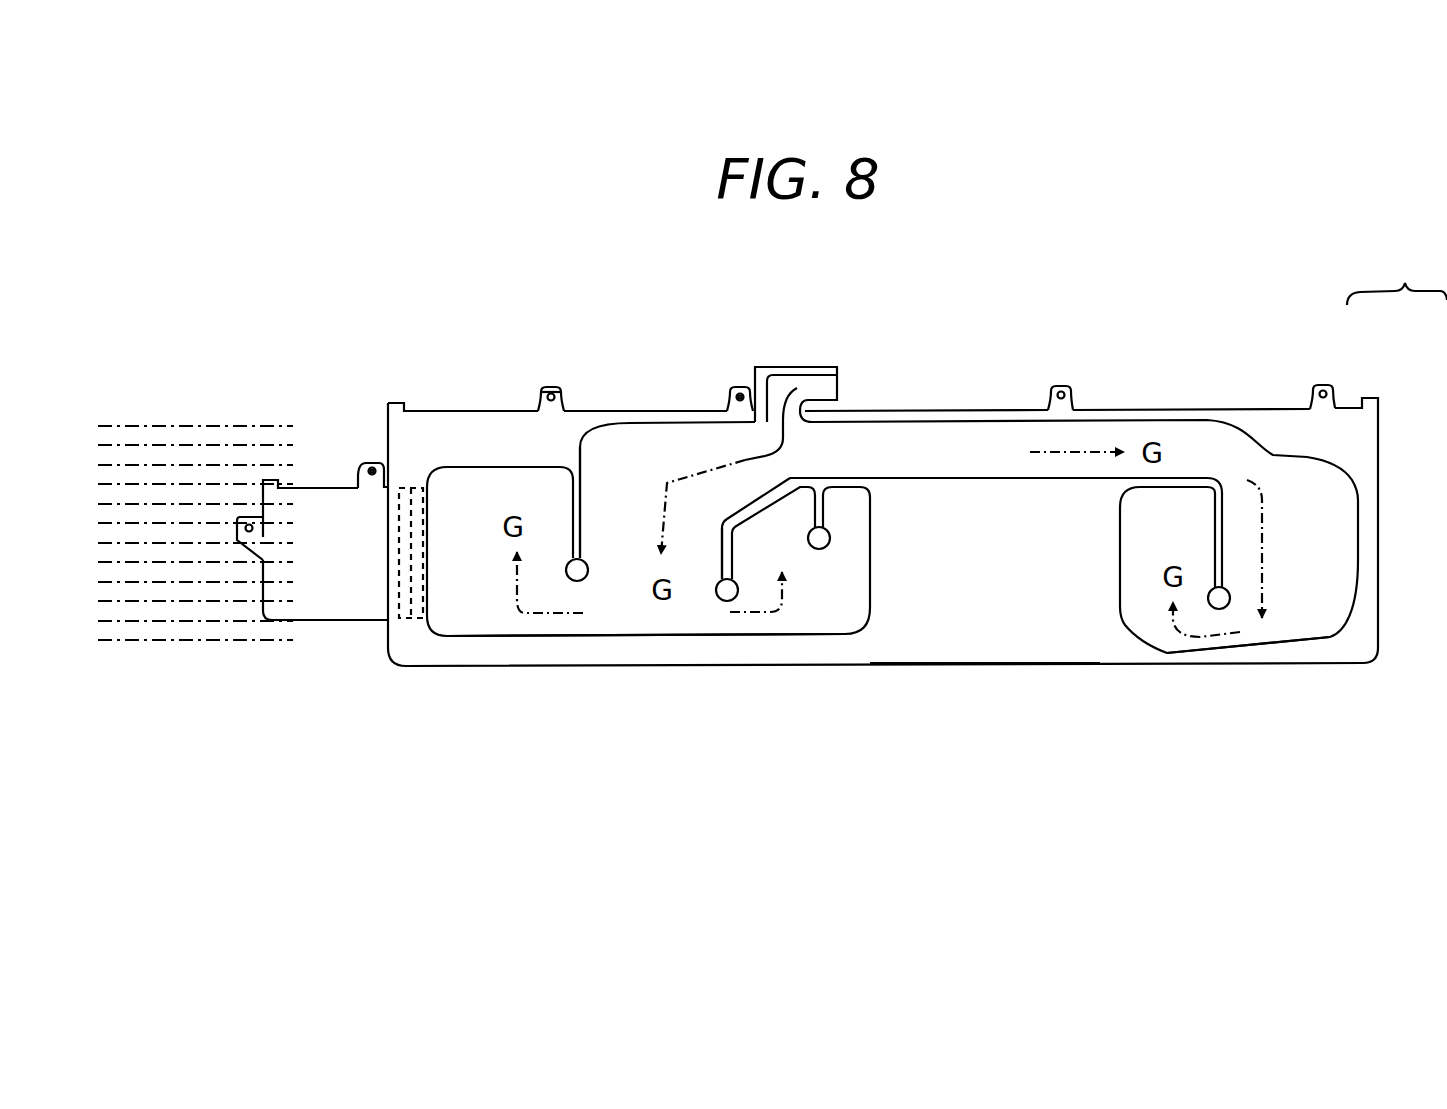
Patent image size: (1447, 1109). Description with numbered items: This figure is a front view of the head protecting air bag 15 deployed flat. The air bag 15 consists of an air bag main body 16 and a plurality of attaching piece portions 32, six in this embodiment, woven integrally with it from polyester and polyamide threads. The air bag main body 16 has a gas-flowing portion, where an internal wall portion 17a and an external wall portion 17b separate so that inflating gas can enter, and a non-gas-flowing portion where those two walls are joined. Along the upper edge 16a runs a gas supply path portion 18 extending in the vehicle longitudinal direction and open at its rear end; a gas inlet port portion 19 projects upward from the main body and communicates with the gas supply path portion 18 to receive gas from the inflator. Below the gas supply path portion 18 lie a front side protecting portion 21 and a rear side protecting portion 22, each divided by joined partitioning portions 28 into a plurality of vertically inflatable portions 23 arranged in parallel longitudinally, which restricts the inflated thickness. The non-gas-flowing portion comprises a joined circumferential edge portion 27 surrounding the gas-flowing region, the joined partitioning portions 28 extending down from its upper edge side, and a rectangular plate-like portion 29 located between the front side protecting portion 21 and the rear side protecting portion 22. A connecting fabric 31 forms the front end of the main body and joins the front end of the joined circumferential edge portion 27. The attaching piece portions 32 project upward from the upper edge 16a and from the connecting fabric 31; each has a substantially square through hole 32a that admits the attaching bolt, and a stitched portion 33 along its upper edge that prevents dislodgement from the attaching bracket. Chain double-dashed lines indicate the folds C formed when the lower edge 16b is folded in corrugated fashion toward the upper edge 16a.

The air bag 15 is at (1397, 276).
The air bag main body 16 is at (1401, 418).
The upper edge side of the air bag main body 16a is at (1218, 408).
The lower edge side of the air bag main body 16b is at (1020, 650).
The internal wall portion 17a is at (655, 615).
The external wall portion 17b is at (725, 617).
The gas supply path portion 18 is at (950, 432).
The gas inlet port portion 19 is at (795, 378).
The front side protecting portion 21 is at (546, 650).
The rear side protecting portion 22 is at (1293, 654).
The vertically inflatable portions 23 is at (637, 455).
The joined circumferential edge portion 27 is at (442, 428).
The joined partitioning portions 28 is at (585, 568).
The plate-like portion 29 is at (975, 622).
The connecting fabric 31 is at (335, 615).
The attaching piece portions 32 is at (565, 390).
The through hole 32a is at (552, 387).
The stitched portion 33 is at (739, 392).
The folds C is at (123, 445).